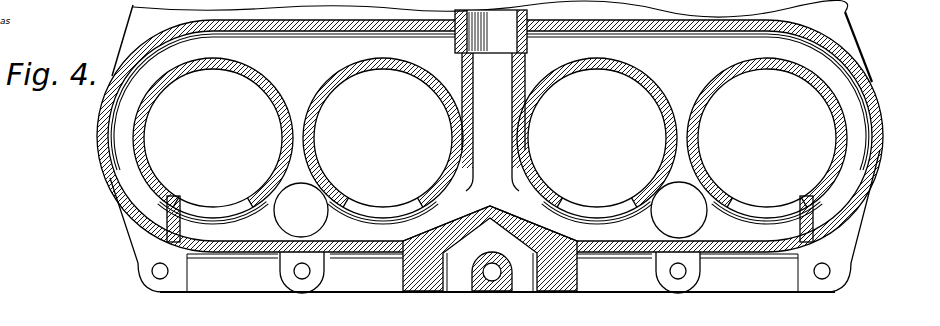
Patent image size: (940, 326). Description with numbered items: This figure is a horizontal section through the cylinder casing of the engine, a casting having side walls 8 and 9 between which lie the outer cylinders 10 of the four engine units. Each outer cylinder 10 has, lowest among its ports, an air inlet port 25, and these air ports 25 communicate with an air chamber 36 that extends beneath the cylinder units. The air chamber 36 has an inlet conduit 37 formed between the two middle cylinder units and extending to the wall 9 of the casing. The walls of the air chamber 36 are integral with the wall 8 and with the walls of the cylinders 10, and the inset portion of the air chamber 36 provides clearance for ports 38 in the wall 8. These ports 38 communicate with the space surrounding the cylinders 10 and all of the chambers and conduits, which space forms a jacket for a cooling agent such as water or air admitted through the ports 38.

The side wall 8 is at (716, 247).
The side wall 9 is at (309, 33).
The outer cylinder 10 is at (172, 78).
The air inlet port 25 is at (213, 212).
The air chamber 36 is at (474, 211).
The inlet conduit 37 is at (527, 47).
The ports 38 is at (490, 248).